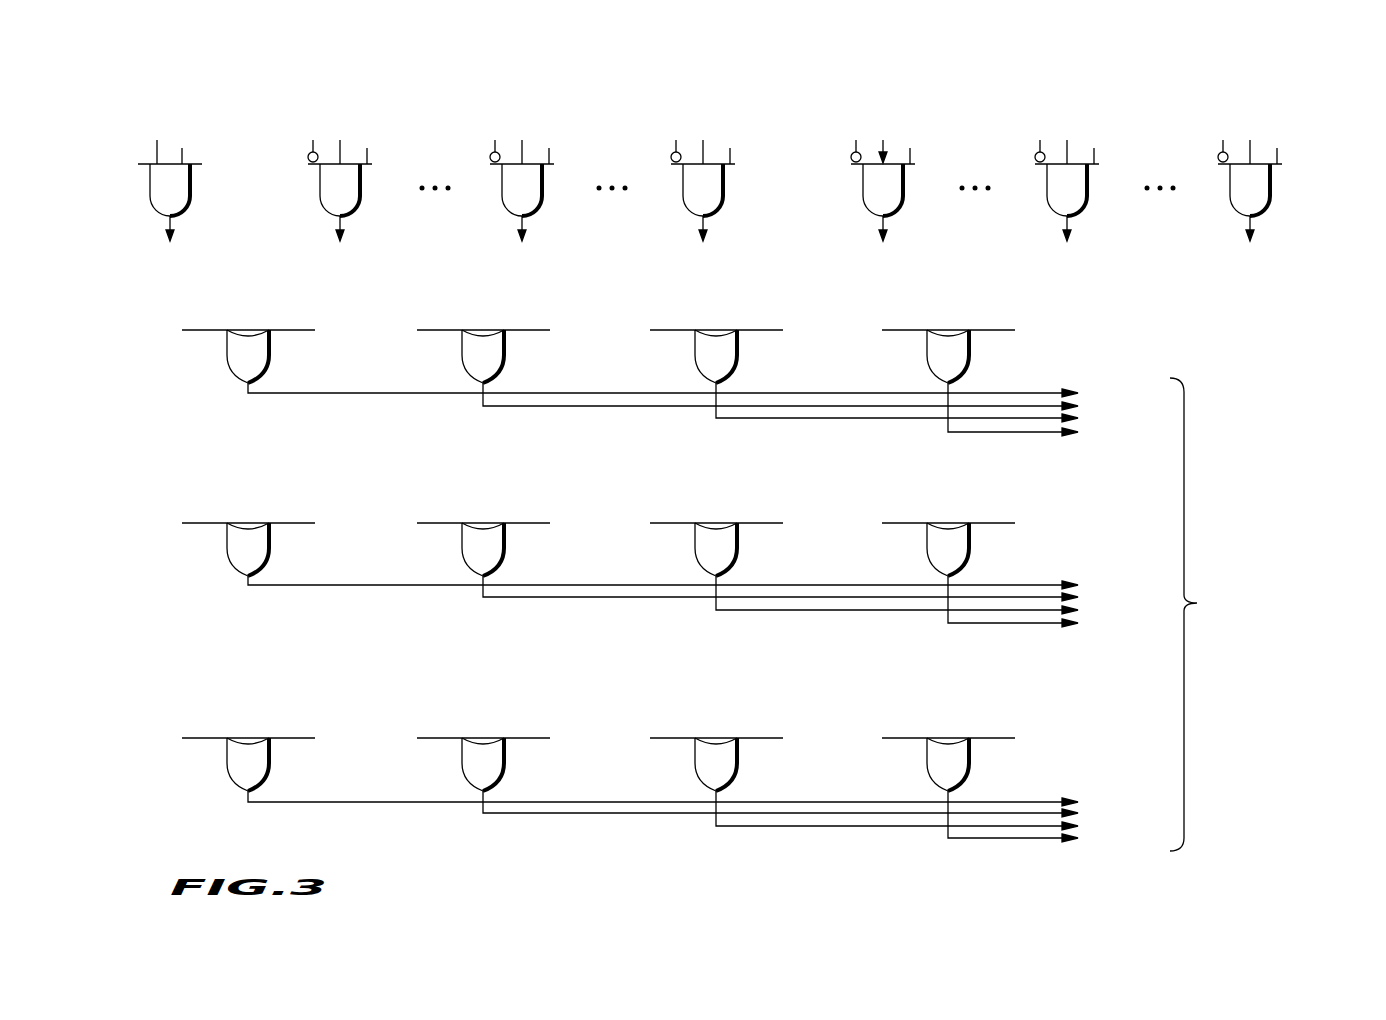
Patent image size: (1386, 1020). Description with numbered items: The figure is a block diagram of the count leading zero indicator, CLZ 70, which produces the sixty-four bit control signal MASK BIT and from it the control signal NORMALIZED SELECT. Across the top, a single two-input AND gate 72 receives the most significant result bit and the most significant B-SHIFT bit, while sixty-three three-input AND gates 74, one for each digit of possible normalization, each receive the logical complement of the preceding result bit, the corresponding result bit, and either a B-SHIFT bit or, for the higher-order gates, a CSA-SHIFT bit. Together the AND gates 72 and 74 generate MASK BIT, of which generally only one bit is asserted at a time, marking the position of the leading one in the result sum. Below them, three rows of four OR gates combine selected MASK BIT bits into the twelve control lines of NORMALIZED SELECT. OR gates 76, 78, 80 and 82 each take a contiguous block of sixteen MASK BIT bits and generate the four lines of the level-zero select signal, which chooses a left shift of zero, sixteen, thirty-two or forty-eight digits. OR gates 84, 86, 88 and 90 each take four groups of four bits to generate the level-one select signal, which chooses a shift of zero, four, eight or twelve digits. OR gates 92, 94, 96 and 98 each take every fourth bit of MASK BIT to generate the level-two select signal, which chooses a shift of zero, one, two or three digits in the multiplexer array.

The CLZ 70 is at (300, 840).
The two-input AND gate 72 is at (160, 197).
The three-input AND gates 74 is at (1353, 110).
The OR gate 76 is at (236, 362).
The OR gate 78 is at (471, 362).
The OR gate 80 is at (704, 362).
The OR gate 82 is at (936, 362).
The OR gate 84 is at (236, 555).
The OR gate 86 is at (471, 555).
The OR gate 88 is at (704, 555).
The OR gate 90 is at (936, 555).
The OR gate 92 is at (236, 770).
The OR gate 94 is at (471, 770).
The OR gate 96 is at (704, 770).
The OR gate 98 is at (936, 770).